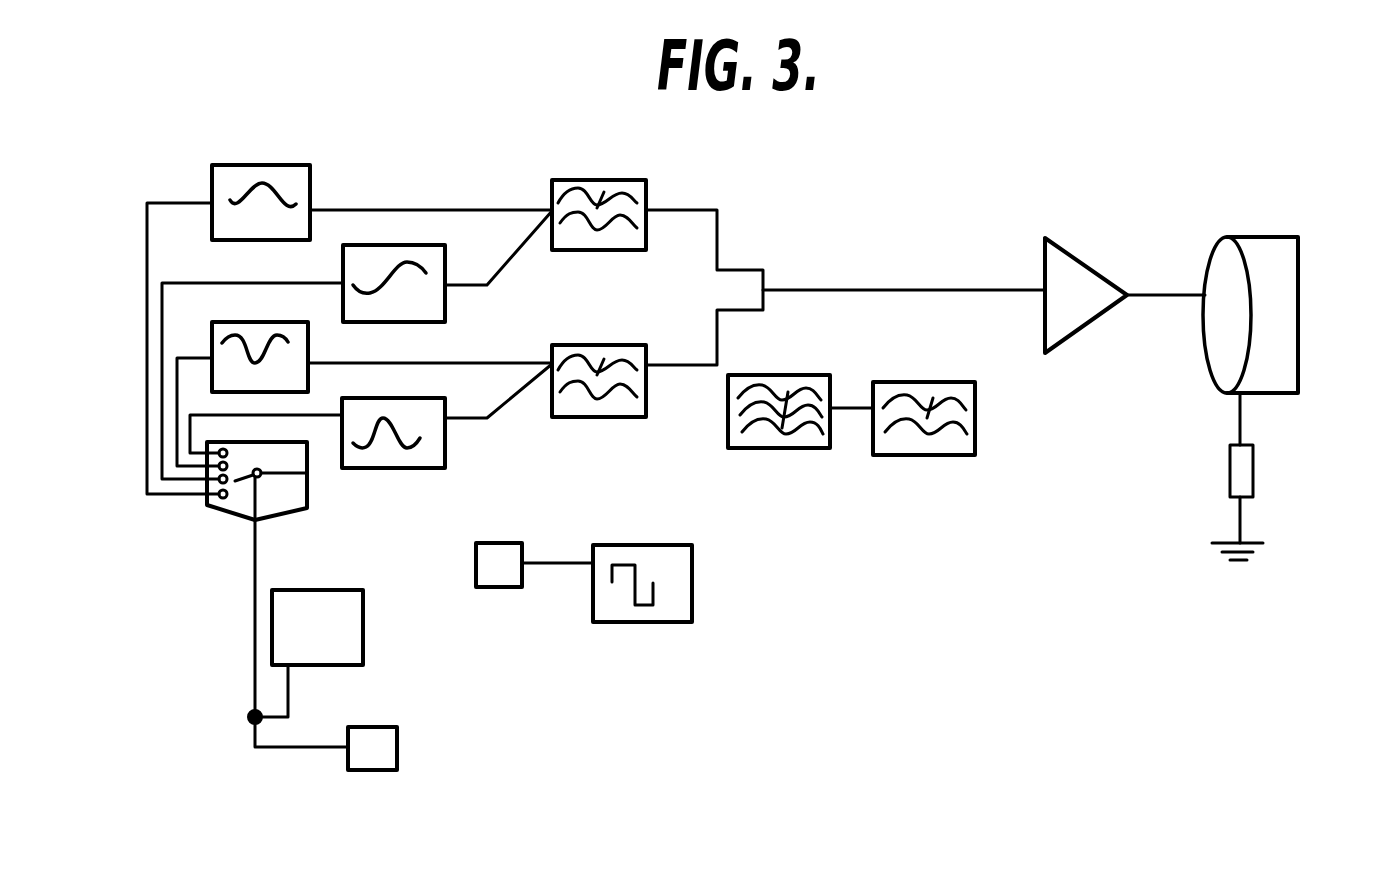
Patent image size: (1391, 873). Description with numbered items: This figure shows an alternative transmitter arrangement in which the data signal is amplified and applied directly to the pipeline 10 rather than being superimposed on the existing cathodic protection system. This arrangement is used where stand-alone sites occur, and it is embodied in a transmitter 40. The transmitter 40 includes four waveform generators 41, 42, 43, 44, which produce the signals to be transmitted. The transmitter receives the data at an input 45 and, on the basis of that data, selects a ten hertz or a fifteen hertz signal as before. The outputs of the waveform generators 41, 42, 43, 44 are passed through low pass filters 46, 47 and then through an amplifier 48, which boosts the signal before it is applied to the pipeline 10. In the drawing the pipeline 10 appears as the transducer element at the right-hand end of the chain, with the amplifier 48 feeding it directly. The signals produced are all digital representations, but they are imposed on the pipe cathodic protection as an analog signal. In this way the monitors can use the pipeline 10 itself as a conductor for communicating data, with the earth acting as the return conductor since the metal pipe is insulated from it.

The pipeline 10 is at (1268, 248).
The transmitter 40 is at (1270, 647).
The waveform generator 41 is at (297, 183).
The waveform generator 42 is at (430, 303).
The waveform generator 43 is at (237, 370).
The waveform generator 44 is at (442, 457).
The input 45 is at (375, 760).
The low pass filter 46 is at (562, 188).
The low pass filter 47 is at (602, 347).
The amplifier 48 is at (1085, 310).